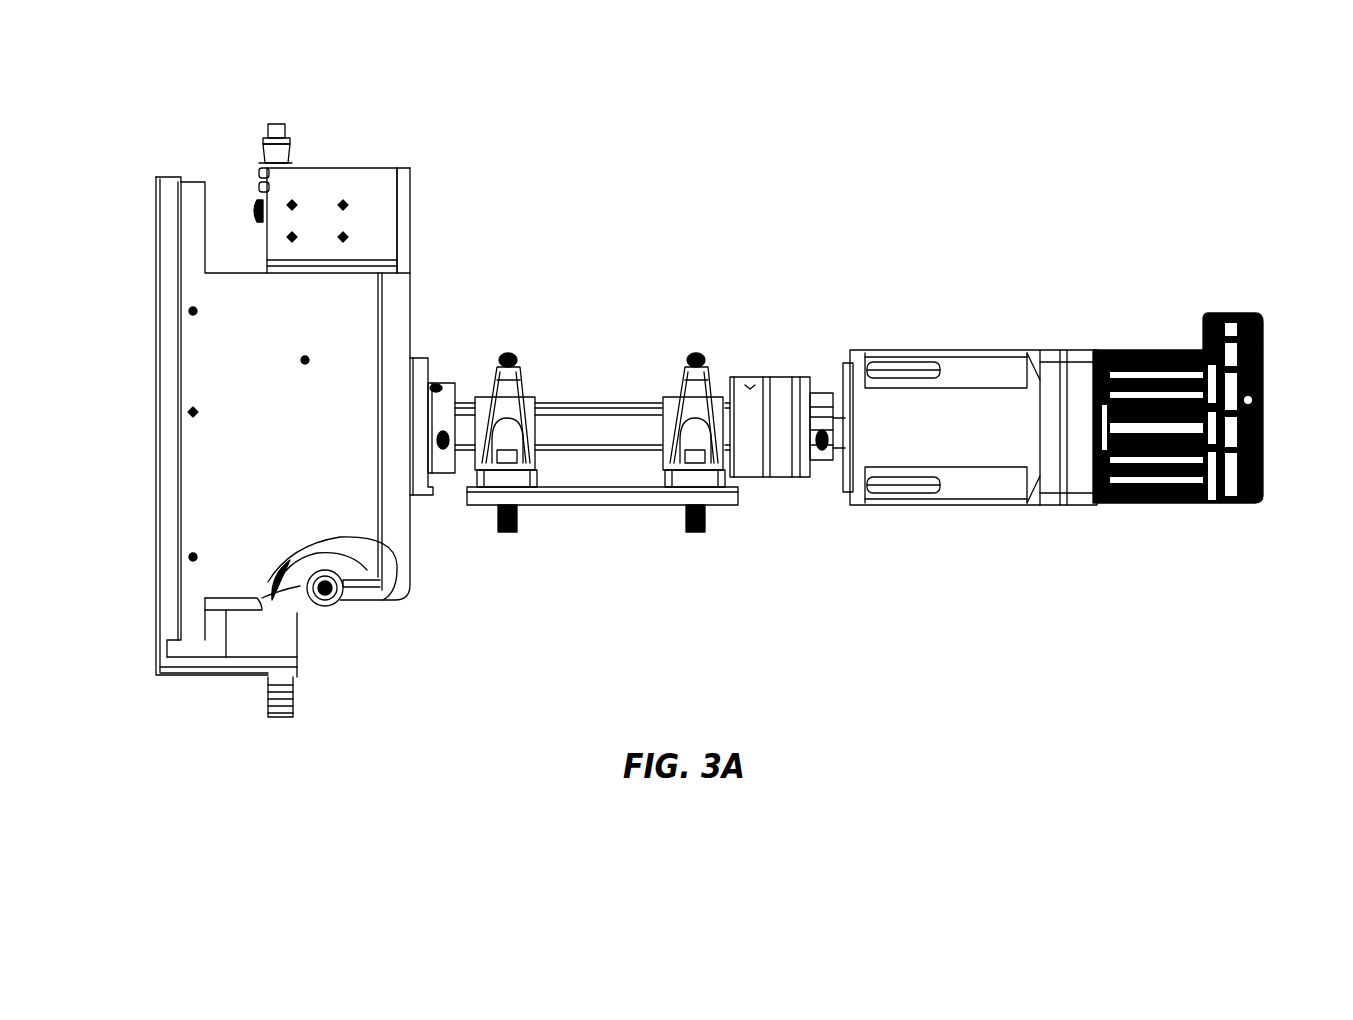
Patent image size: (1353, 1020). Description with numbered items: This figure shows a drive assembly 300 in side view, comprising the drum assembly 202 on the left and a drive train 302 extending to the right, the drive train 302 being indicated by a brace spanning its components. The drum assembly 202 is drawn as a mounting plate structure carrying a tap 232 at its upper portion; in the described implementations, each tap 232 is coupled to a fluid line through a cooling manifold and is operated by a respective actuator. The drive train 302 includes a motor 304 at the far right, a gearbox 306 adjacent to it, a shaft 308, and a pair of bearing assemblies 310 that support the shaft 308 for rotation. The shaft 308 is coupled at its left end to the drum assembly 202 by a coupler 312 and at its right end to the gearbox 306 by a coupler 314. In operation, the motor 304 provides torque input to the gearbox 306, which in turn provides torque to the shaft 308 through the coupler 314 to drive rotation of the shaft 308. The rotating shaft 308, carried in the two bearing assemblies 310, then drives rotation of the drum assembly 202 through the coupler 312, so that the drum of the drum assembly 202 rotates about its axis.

The drum assembly 202 is at (155, 292).
The tap 232 is at (265, 160).
The drive assembly 300 is at (1242, 145).
The drive train 302 is at (1237, 608).
The motor 304 is at (1237, 313).
The gearbox 306 is at (940, 352).
The shaft 308 is at (568, 402).
The bearing assemblies 310 is at (515, 355).
The coupler 312 is at (437, 383).
The coupler 314 is at (780, 378).